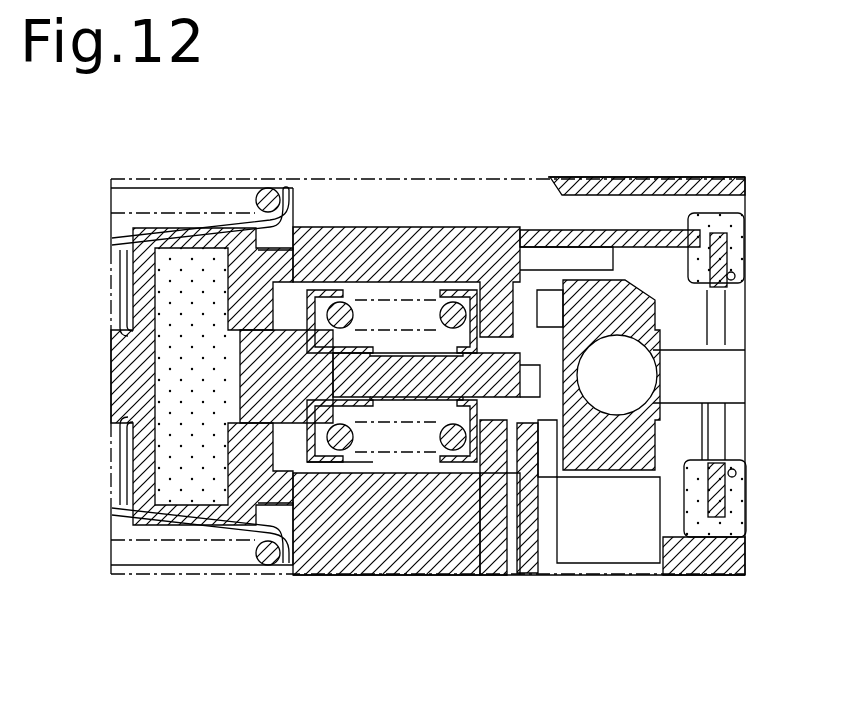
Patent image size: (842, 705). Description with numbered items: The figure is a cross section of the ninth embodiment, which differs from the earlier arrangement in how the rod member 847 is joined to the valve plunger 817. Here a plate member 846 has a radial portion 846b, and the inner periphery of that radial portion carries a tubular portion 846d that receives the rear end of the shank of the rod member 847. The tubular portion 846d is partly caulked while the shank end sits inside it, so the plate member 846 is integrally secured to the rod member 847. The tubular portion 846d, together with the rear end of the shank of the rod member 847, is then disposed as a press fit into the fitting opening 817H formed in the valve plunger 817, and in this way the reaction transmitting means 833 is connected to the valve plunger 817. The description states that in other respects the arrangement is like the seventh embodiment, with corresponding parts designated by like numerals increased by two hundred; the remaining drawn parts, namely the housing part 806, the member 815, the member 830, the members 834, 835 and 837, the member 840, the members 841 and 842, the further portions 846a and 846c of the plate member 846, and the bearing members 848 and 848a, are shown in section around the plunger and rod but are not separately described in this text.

The housing base 806 is at (294, 562).
The seal 815 is at (826, 308).
The valve plunger 817 is at (647, 540).
The fitting opening 817H is at (660, 363).
The output shaft 830 is at (735, 390).
The reaction transmitting means 833 is at (404, 294).
The piston hub 834 is at (247, 348).
The pad 835 is at (160, 458).
The piston body 837 is at (130, 358).
The shaft 840 is at (385, 398).
The diaphragm 841 is at (248, 318).
The O-ring seal 842 is at (290, 290).
The plate member 846 is at (490, 343).
The sleeve flange 846a is at (499, 353).
The radial portion 846b is at (497, 540).
The sleeve portion 846c is at (460, 540).
The tubular portion 846d is at (583, 540).
The rod member 847 is at (350, 500).
The bearing 848 is at (380, 342).
The bearing flange 848a is at (416, 388).